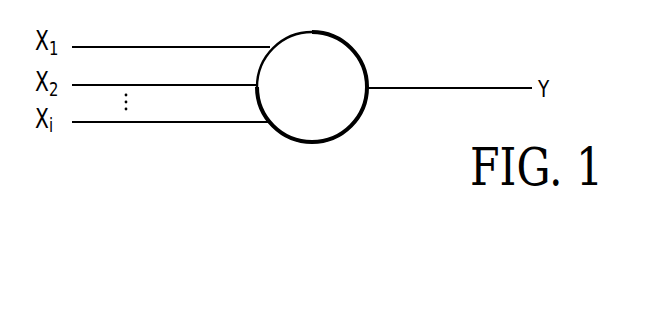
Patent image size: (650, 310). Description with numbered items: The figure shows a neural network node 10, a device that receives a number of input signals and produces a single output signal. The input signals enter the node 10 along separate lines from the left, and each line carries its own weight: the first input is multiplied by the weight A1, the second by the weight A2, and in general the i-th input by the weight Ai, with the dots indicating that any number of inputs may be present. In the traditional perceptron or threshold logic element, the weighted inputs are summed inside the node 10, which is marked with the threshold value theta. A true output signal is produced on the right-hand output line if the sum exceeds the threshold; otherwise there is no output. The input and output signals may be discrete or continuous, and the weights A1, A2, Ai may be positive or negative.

The neural network node 10 is at (324, 33).
The input weight A1 is at (153, 47).
The input weight A2 is at (153, 85).
The input weight Ai is at (148, 122).